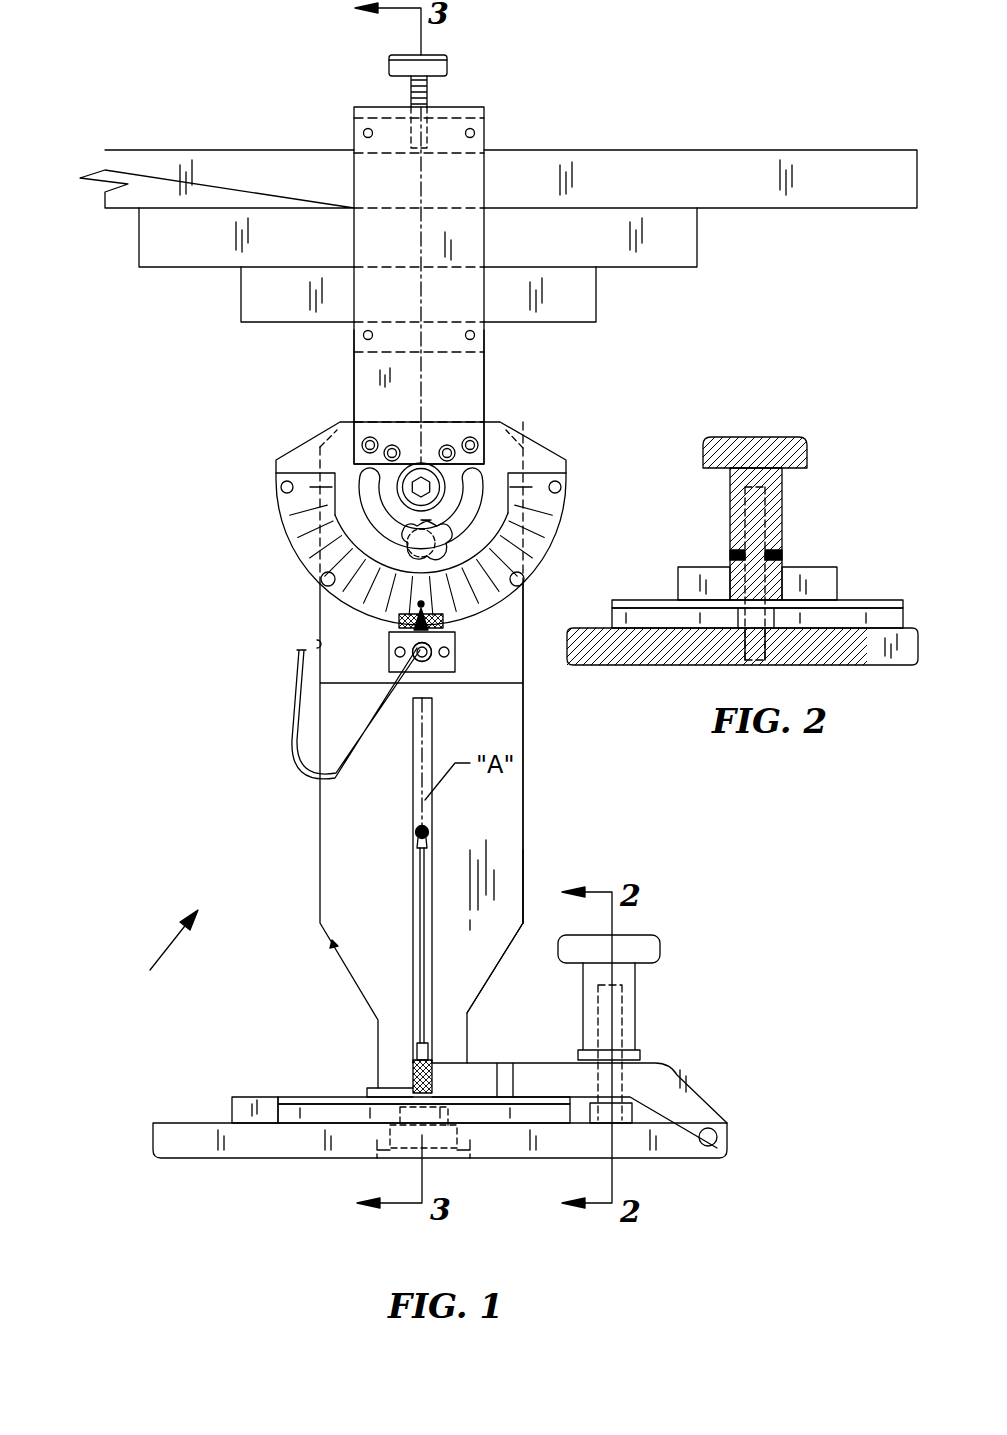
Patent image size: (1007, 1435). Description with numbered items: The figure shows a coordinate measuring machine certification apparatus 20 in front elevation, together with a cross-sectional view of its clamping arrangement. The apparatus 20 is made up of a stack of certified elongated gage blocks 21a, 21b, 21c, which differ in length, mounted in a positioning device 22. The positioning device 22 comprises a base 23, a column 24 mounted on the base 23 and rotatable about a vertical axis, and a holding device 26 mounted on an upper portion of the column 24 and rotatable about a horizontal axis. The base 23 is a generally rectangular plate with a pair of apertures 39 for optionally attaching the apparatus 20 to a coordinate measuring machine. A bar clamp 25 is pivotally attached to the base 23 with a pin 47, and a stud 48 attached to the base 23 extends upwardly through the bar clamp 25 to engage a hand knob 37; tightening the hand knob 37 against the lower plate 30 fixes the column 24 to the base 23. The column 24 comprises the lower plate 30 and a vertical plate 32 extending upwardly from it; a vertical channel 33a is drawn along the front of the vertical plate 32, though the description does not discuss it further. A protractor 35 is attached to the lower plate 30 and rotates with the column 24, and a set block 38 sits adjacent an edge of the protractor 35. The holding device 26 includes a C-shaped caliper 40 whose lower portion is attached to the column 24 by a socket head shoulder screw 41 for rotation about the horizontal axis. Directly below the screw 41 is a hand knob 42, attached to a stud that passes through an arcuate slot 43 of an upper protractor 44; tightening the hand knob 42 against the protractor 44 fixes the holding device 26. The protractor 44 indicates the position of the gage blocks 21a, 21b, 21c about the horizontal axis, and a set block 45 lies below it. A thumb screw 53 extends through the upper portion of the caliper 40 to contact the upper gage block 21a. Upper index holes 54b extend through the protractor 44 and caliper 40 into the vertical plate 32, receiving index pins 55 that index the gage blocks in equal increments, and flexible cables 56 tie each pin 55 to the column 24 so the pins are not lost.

In FIG. 1, the coordinate measuring machine certification apparatus 20 is at (165, 959).
In FIG. 1, the certified elongated gage block 21a is at (817, 150).
In FIG. 1, the certified elongated gage block 21b is at (178, 268).
In FIG. 1, the certified elongated gage block 21c is at (300, 323).
In FIG. 1, the positioning device 22 is at (320, 840).
In FIG. 1, the base 23 is at (175, 1123).
In FIG. 2, the base 23 is at (840, 665).
In FIG. 1, the column 24 is at (523, 775).
In FIG. 1, the bar clamp 25 is at (680, 1068).
In FIG. 2, the bar clamp 25 is at (810, 567).
In FIG. 1, the holding device 26 is at (470, 107).
In FIG. 1, the lower plate 30 is at (305, 1123).
In FIG. 2, the lower plate 30 is at (658, 610).
In FIG. 1, the vertical plate 32 is at (523, 850).
In FIG. 1, the channel 33a is at (415, 808).
In FIG. 1, the protractor 35 is at (332, 1097).
In FIG. 1, the hand knob 37 is at (655, 935).
In FIG. 2, the hand knob 37 is at (783, 433).
In FIG. 1, the set block 38 is at (258, 1098).
In FIG. 1, the aperture 39 is at (455, 655).
In FIG. 1, the caliper 40 is at (484, 378).
In FIG. 1, the socket head shoulder screw 41 is at (400, 505).
In FIG. 1, the hand knob 42 is at (450, 552).
In FIG. 1, the arcuate slot 43 is at (480, 478).
In FIG. 1, the protractor 44 is at (565, 498).
In FIG. 1, the set block 45 is at (408, 661).
In FIG. 1, the pin 47 is at (718, 1148).
In FIG. 2, the stud 48 is at (735, 525).
In FIG. 1, the thumb screw 53 is at (447, 55).
In FIG. 1, the index holes 54b is at (284, 493).
In FIG. 1, the index pin 55 is at (412, 636).
In FIG. 1, the flexible cable 56 is at (305, 772).